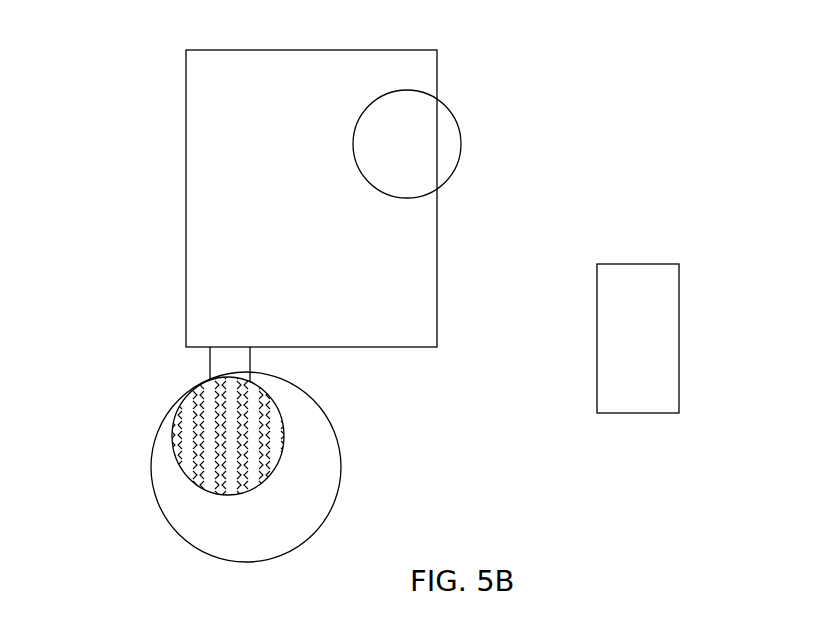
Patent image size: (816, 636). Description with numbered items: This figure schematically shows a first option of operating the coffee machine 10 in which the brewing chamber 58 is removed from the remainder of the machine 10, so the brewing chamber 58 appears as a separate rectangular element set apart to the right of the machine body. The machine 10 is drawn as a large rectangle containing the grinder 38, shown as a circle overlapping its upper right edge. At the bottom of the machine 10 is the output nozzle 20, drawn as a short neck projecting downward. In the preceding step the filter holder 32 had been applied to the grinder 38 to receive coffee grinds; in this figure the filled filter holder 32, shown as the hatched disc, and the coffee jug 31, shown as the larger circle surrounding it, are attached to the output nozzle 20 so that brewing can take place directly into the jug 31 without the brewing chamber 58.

The machine 10 is at (125, 127).
The grinder 38 is at (445, 105).
The output nozzle 20 is at (210, 373).
The coffee jug 31 is at (340, 473).
The filter holder 32 is at (172, 442).
The brewing chamber 58 is at (680, 327).